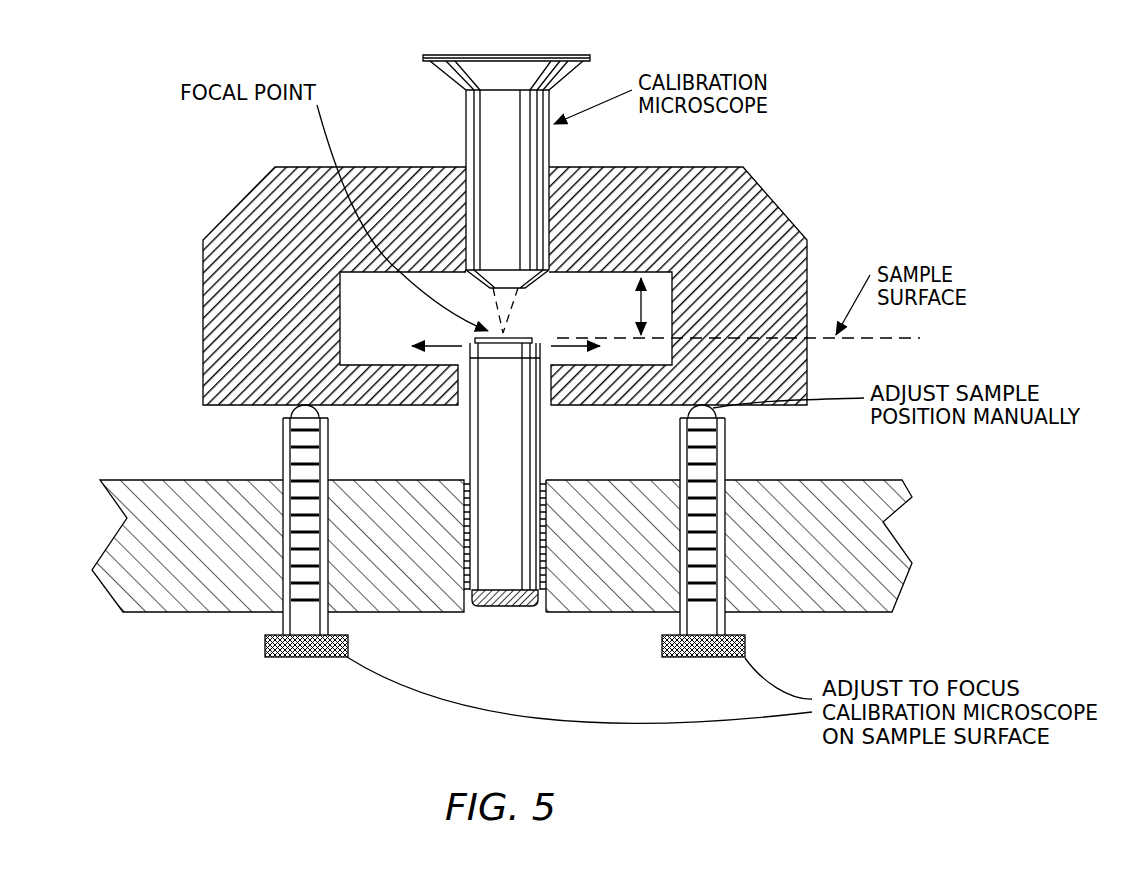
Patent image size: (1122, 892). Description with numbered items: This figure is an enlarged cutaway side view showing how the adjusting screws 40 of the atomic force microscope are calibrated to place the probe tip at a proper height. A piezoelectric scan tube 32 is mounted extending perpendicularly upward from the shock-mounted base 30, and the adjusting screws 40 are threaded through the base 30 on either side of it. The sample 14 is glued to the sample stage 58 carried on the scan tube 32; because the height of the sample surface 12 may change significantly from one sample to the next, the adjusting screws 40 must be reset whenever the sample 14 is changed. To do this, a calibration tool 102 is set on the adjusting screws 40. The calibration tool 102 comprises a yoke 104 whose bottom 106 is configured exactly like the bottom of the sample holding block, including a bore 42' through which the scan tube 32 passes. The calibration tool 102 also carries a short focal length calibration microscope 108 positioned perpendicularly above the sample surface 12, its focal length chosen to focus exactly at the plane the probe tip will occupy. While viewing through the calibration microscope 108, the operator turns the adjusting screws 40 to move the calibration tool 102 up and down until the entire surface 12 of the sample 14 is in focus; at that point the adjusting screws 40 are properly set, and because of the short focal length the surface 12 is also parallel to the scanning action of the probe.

The calibration tool 102 is at (554, 248).
The yoke 104 is at (794, 242).
The bottom 106 is at (609, 407).
The calibration microscope 108 is at (526, 151).
The sample surface 12 is at (524, 337).
The sample 14 is at (534, 340).
The sample stage 58 is at (472, 344).
The bore 42' is at (503, 474).
The piezoelectric scan tube 32 is at (524, 430).
The base 30 is at (890, 548).
The adjusting screws 40 is at (296, 618).